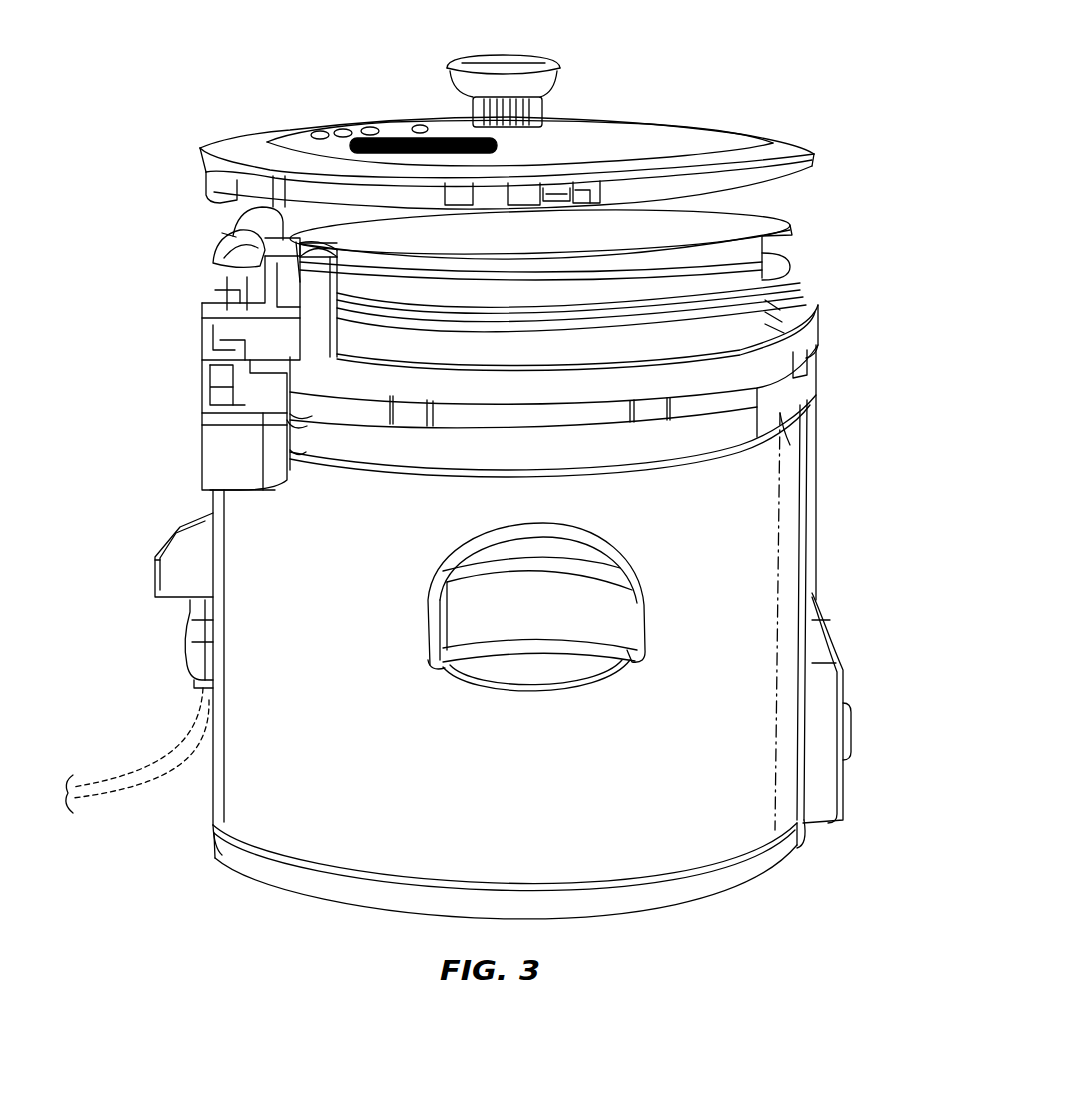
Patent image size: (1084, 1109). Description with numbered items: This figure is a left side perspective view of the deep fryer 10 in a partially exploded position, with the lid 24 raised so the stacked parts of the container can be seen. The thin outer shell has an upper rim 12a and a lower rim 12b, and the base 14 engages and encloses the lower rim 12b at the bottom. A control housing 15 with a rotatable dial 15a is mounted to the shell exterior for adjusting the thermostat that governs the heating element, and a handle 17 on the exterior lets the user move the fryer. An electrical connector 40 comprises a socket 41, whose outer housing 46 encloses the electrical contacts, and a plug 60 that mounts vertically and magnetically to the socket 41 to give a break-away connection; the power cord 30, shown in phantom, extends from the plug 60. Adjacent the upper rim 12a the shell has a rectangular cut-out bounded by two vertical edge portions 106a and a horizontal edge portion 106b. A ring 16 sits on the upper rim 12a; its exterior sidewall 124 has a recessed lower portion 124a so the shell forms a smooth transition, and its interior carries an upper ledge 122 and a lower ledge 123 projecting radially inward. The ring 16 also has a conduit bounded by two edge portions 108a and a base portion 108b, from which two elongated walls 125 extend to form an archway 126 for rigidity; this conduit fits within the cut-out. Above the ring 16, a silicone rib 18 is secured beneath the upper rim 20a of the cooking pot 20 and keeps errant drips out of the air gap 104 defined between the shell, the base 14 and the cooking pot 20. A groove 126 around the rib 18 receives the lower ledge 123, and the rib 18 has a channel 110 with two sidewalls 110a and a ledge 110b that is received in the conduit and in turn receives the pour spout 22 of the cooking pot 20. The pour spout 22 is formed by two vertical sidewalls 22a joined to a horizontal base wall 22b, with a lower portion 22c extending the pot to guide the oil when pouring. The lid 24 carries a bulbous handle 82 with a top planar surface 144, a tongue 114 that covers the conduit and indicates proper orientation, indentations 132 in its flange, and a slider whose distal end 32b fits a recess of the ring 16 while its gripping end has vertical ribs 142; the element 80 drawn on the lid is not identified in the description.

The deep fryer 10 is at (724, 50).
The upper rim 12a is at (580, 470).
The lower rim 12b is at (603, 877).
The base 14 is at (743, 872).
The control housing 15 is at (871, 708).
The rotatable dial 15a is at (850, 733).
The ring 16 is at (608, 374).
The handle 17 is at (623, 620).
The rib 18 is at (782, 250).
The cooking pot 20 is at (584, 220).
The upper open rim 20a is at (790, 185).
The pour spout 22 is at (275, 254).
The sidewall 22a is at (223, 230).
The base wall 22b is at (258, 222).
The lower portion 22c is at (333, 297).
The lid 24 is at (760, 140).
The power cord 30 is at (162, 765).
The distal end 32b is at (542, 200).
The electrical connector 40 is at (140, 595).
The socket 41 is at (170, 533).
The outer housing 46 is at (153, 560).
The plug 60 is at (182, 657).
The control buttons 80 is at (423, 122).
The handle 82 is at (531, 72).
The air gap 104 is at (786, 404).
The edge portion 106a is at (202, 430).
The edge portion 106b is at (240, 482).
The edge portion 108a is at (228, 371).
The base portion 108b is at (218, 392).
The channel 110 is at (263, 302).
The sidewall 110a is at (333, 337).
The ledge 110b is at (227, 285).
The tongue 114 is at (218, 182).
The upper ledge 122 is at (220, 330).
The lower ledge 123 is at (210, 360).
The sidewall 124 is at (814, 343).
The lower portion 124a is at (782, 380).
The elongated wall 125 is at (313, 418).
The archway 126 is at (792, 283).
The indentation 132 is at (580, 193).
The rib 142 is at (545, 110).
The top planar surface 144 is at (487, 57).